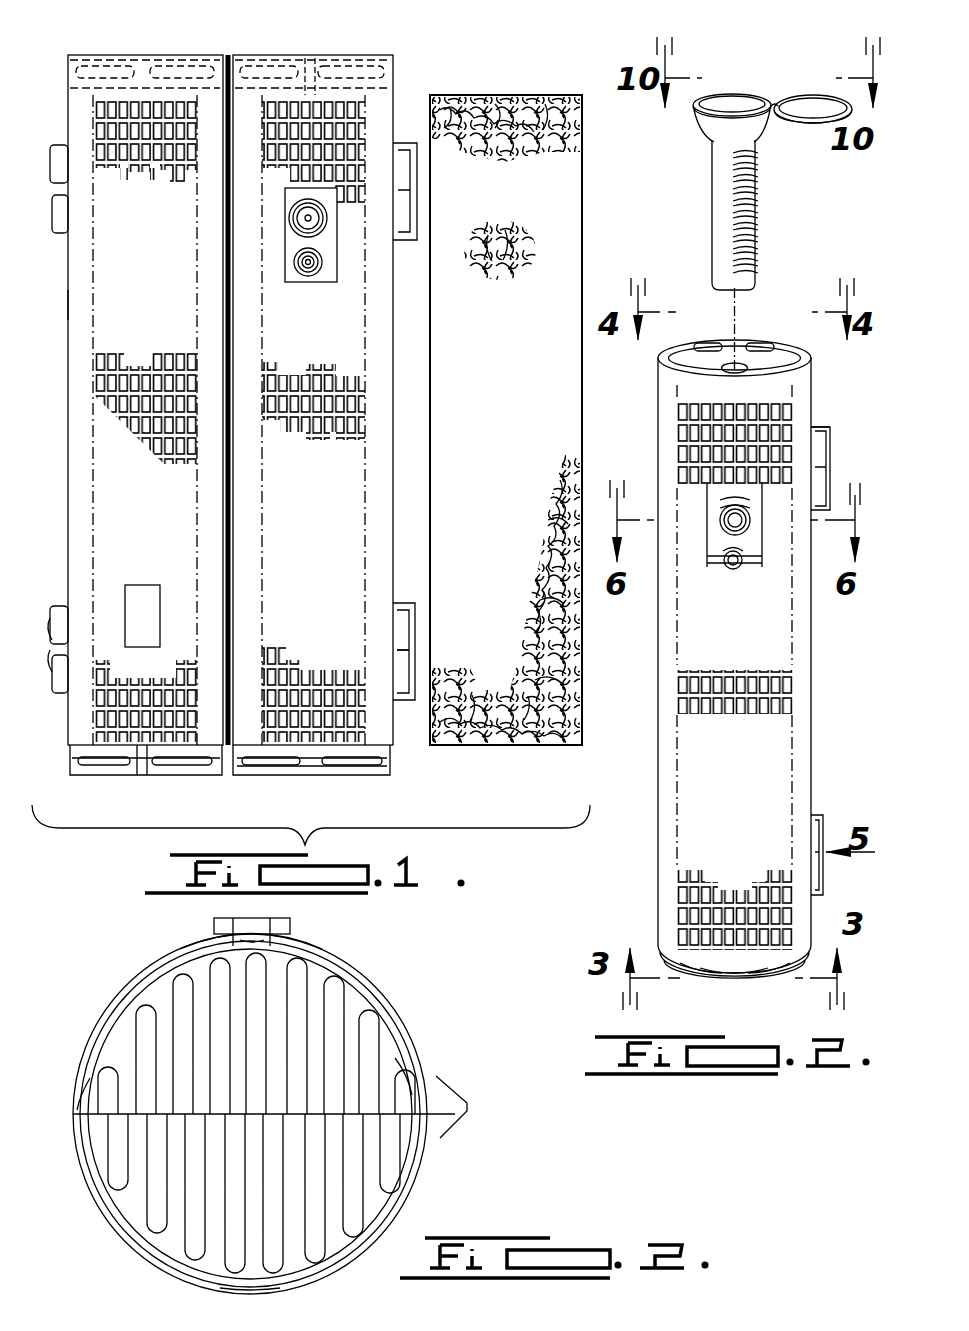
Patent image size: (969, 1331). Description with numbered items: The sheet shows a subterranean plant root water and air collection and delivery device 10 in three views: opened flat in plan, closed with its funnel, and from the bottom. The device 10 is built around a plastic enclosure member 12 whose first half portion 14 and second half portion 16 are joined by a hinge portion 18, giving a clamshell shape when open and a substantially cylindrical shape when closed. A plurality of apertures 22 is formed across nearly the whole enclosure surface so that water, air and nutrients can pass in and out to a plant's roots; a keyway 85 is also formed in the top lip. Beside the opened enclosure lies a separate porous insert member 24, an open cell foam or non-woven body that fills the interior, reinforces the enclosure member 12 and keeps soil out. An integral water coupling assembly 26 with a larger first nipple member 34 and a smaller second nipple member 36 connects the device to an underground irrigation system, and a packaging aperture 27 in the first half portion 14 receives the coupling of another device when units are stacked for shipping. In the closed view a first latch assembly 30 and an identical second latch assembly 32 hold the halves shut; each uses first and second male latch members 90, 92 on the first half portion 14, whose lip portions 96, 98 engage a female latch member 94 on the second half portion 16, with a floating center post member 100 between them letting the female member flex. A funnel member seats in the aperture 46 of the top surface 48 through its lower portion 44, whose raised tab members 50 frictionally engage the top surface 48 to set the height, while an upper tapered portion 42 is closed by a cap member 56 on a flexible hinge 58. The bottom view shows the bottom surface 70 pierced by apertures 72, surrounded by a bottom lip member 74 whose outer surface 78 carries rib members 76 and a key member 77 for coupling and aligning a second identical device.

In FIG. 1, the subterranean plant root water and air collection and delivery device 10 is at (414, 52).
In FIG. 1, the enclosure member 12 is at (66, 308).
In FIG. 1, the first half portion 14 is at (72, 112).
In FIG. 3, the first half portion 14 is at (425, 1156).
In FIG. 1, the second half portion 16 is at (392, 104).
In FIG. 2, the second half portion 16 is at (658, 652).
In FIG. 3, the second half portion 16 is at (86, 1078).
In FIG. 1, the hinge portion 18 is at (231, 57).
In FIG. 3, the hinge portion 18 is at (70, 1113).
In FIG. 1, the apertures 22 is at (108, 158).
In FIG. 2, the apertures 22 is at (672, 434).
In FIG. 1, the porous insert member 24 is at (505, 105).
In FIG. 1, the water coupling assembly 26 is at (345, 278).
In FIG. 2, the water coupling assembly 26 is at (715, 545).
In FIG. 1, the packaging aperture 27 is at (150, 584).
In FIG. 2, the first latch assembly 30 is at (832, 424).
In FIG. 2, the second latch assembly 32 is at (825, 812).
In FIG. 3, the second latch assembly 32 is at (455, 1082).
In FIG. 2, the first nipple member 34 is at (748, 502).
In FIG. 3, the first nipple member 34 is at (292, 927).
In FIG. 2, the second nipple member 36 is at (750, 560).
In FIG. 3, the second nipple member 36 is at (238, 941).
In FIG. 2, the upper tapered portion 42 is at (712, 122).
In FIG. 2, the lower portion 44 is at (720, 190).
In FIG. 2, the aperture 46 is at (745, 365).
In FIG. 2, the top surface 48 is at (708, 362).
In FIG. 2, the raised tab members 50 is at (758, 240).
In FIG. 2, the cap member 56 is at (812, 124).
In FIG. 2, the flexible hinge 58 is at (772, 102).
In FIG. 3, the bottom surface 70 is at (388, 1030).
In FIG. 3, the apertures 72 is at (134, 1026).
In FIG. 2, the bottom lip member 74 is at (736, 975).
In FIG. 3, the bottom lip member 74 is at (200, 942).
In FIG. 1, the rib members 76 is at (352, 770).
In FIG. 3, the rib members 76 is at (365, 980).
In FIG. 1, the key member 77 is at (142, 772).
In FIG. 3, the key member 77 is at (232, 1290).
In FIG. 3, the outer surface 78 is at (252, 927).
In FIG. 1, the keyway 85 is at (315, 48).
In FIG. 1, the first male latch member 90 is at (62, 608).
In FIG. 1, the second male latch member 92 is at (58, 694).
In FIG. 1, the female latch member 94 is at (403, 640).
In FIG. 1, the lip portion 96 is at (52, 622).
In FIG. 1, the lip portion 98 is at (52, 644).
In FIG. 1, the floating center post member 100 is at (406, 636).